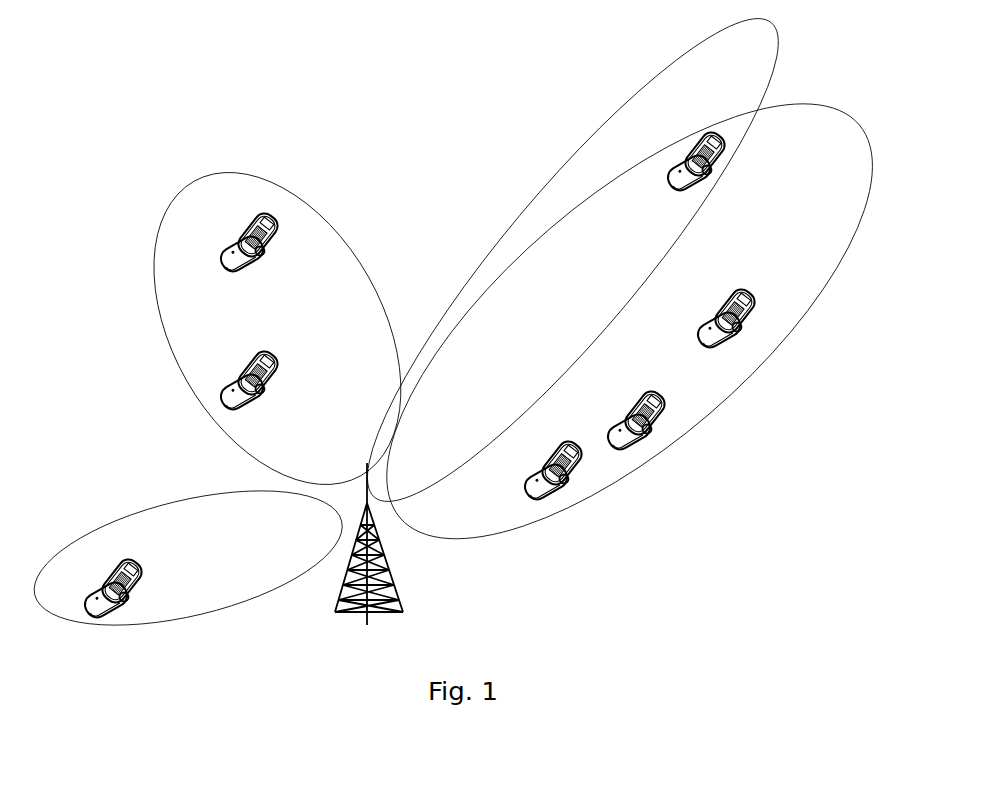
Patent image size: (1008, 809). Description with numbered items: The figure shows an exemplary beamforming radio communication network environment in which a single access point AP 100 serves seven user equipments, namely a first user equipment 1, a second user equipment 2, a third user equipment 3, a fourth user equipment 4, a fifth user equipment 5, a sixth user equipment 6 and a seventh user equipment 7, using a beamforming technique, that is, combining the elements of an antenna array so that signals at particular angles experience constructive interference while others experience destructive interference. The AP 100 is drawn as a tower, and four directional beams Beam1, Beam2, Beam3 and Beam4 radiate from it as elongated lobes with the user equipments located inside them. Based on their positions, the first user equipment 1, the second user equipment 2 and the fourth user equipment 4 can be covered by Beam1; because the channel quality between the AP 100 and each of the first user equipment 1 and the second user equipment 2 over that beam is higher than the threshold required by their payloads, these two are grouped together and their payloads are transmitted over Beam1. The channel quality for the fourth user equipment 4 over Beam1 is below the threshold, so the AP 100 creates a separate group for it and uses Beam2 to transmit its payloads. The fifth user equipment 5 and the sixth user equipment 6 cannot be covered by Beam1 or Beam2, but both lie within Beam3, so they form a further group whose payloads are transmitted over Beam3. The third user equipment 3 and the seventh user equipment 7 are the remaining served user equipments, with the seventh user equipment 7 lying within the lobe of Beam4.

The AP 100 is at (374, 556).
The UE1 1 is at (551, 463).
The UE2 2 is at (626, 418).
The UE3 3 is at (753, 318).
The UE4 4 is at (696, 147).
The UE5 5 is at (272, 242).
The UE6 6 is at (272, 382).
The UE7 7 is at (124, 579).
The element Beam1 is at (630, 321).
The element Beam2 is at (572, 271).
The element Beam3 is at (277, 329).
The element Beam4 is at (188, 558).